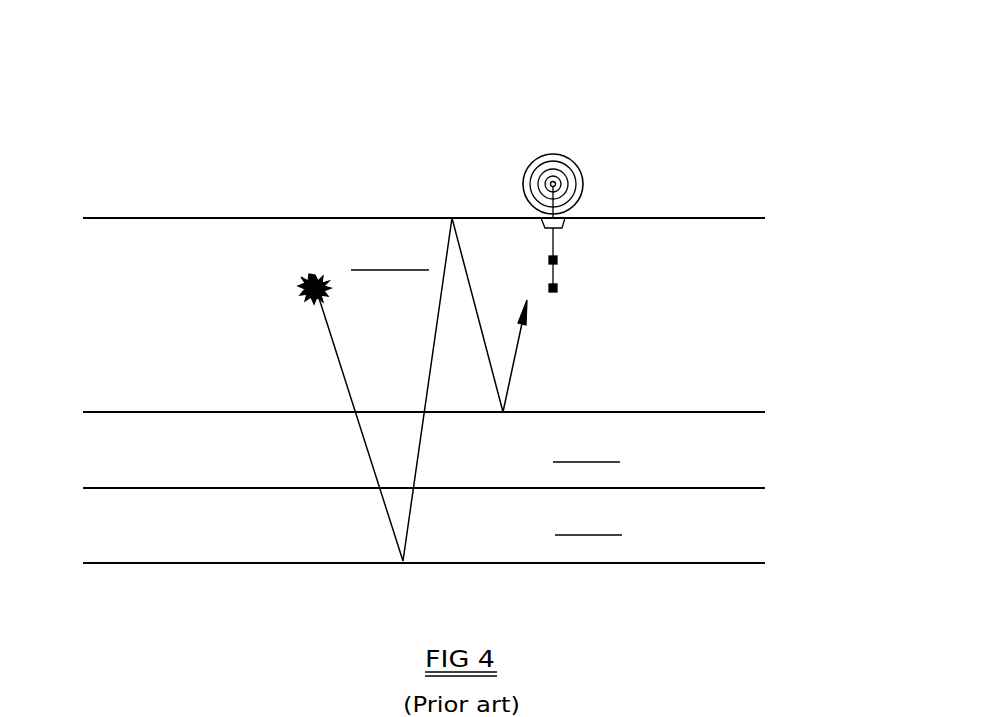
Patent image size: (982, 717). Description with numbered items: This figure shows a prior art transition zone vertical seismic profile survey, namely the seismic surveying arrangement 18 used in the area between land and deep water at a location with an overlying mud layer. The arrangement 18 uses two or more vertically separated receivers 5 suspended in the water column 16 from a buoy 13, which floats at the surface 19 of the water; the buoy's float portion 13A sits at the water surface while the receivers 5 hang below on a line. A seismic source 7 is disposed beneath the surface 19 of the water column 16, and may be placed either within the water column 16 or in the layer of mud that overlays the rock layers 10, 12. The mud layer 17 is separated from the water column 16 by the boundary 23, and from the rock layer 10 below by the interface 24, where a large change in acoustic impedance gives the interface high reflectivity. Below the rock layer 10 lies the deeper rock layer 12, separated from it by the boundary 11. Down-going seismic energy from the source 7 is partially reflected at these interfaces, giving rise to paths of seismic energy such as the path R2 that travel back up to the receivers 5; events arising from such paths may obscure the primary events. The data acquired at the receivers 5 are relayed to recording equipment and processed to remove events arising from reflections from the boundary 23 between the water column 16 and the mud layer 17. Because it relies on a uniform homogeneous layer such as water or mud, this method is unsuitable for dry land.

The seismic surveying arrangement 18 is at (686, 91).
The surface of the water column 19 is at (132, 218).
The seismic source 7 is at (313, 280).
The float/buoy 13A is at (548, 178).
The buoy 13 is at (542, 217).
The receivers 5 is at (557, 260).
The water column 16 is at (752, 267).
The seismic energy path R2 is at (516, 348).
The boundary between water column and mud layer 23 is at (300, 412).
The mud layer 17 is at (733, 452).
The interface 24 is at (300, 488).
The rock layer 10 is at (808, 540).
The boundary 11 is at (237, 563).
The rock layer 12 is at (814, 617).